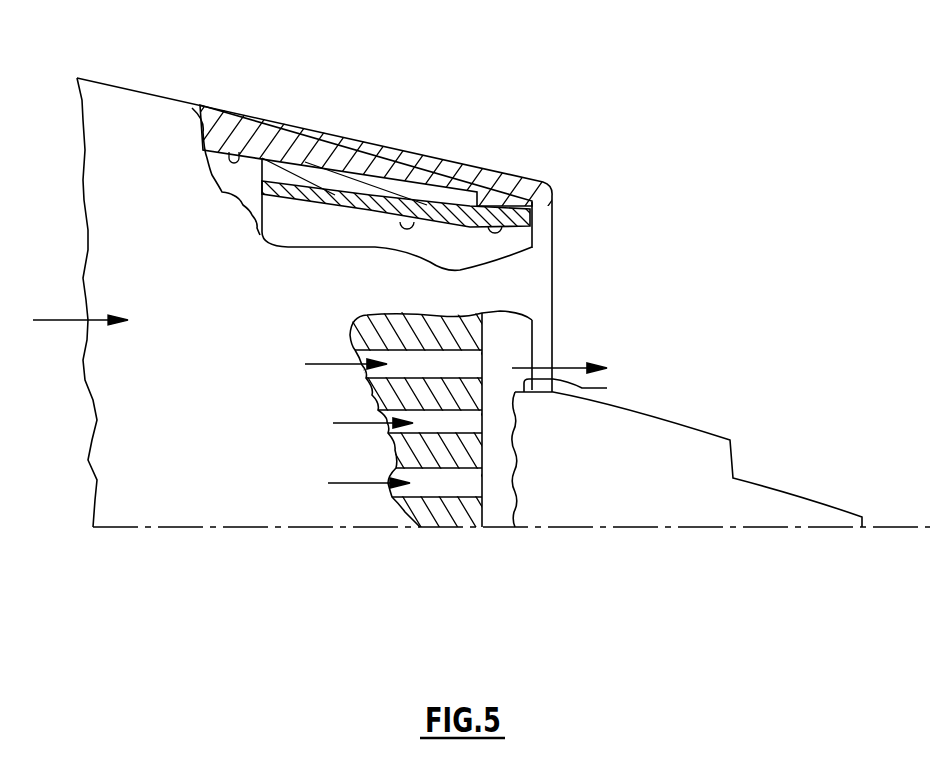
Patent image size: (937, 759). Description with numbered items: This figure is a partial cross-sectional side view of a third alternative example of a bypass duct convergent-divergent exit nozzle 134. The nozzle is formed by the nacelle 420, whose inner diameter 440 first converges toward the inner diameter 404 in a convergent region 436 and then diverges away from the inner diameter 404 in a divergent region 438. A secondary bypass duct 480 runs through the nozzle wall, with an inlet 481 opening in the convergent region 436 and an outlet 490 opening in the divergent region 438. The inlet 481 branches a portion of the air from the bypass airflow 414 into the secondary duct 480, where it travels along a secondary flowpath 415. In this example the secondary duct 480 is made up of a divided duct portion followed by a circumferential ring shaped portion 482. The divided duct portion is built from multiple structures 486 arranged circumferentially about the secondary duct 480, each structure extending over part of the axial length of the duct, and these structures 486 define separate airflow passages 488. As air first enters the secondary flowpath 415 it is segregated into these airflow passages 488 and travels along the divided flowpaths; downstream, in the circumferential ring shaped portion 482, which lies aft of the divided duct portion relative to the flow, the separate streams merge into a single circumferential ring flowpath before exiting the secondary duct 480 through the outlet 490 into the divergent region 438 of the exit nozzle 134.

The convergent-divergent exit nozzle 134 is at (609, 67).
The inner diameter 404 is at (687, 450).
The bypass airflow 414 is at (103, 320).
The secondary flowpath 415 is at (240, 184).
The nacelle 420 is at (113, 85).
The convergent region 436 is at (424, 207).
The divergent region 438 is at (500, 212).
The inner diameter of the nacelle 440 is at (232, 150).
The secondary bypass duct 480 is at (384, 187).
The inlet 481 is at (255, 172).
The circumferential ring shaped portion 482 is at (503, 492).
The structures 486 is at (333, 178).
The airflow passages 488 is at (448, 423).
The outlet 490 is at (517, 200).